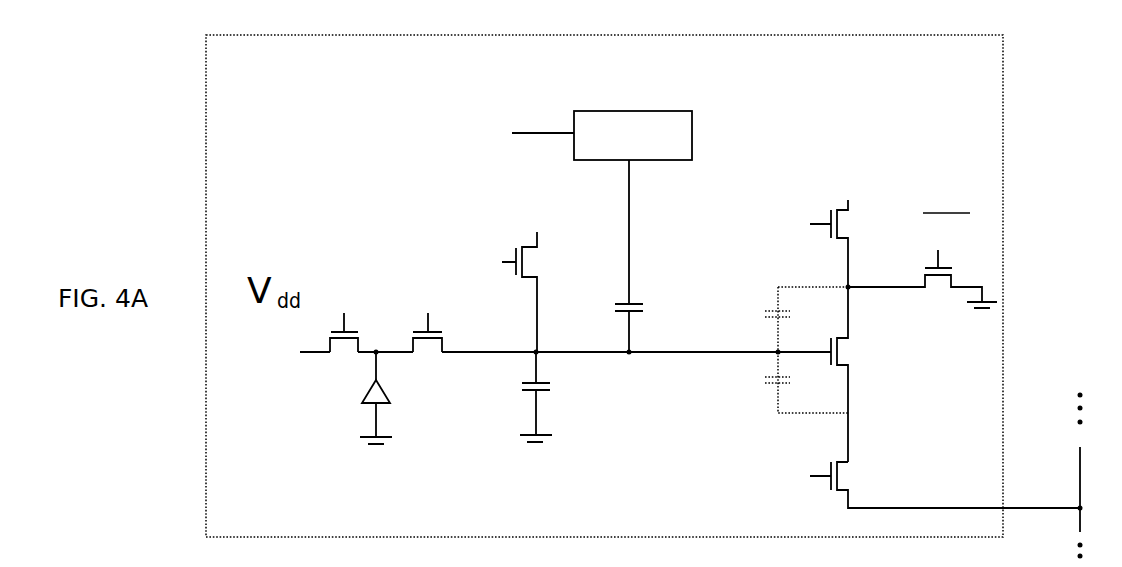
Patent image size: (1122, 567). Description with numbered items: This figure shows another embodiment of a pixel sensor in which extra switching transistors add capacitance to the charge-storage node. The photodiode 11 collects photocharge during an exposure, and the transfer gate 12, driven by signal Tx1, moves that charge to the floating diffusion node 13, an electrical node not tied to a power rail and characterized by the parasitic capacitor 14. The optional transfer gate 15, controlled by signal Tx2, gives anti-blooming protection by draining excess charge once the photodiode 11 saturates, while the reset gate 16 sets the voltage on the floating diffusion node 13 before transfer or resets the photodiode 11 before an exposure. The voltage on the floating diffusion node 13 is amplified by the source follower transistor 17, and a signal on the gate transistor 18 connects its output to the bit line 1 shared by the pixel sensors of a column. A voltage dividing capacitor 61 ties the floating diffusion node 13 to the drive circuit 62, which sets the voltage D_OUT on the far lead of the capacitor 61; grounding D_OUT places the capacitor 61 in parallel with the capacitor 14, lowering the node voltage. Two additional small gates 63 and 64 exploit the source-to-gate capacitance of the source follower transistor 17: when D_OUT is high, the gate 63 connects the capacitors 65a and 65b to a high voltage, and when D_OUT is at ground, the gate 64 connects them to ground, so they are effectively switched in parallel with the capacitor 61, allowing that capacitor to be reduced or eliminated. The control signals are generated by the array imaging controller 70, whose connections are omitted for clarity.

The column signal line 1 is at (1082, 518).
The photodiode 11 is at (391, 399).
The transfer gate 12 is at (443, 345).
The floating diffusion node 13 is at (539, 351).
The parasitic capacitor 14 is at (551, 391).
The transfer gate 15 is at (359, 343).
The reset gate 16 is at (526, 263).
The source follower transistor 17 is at (850, 348).
The gate transistor 18 is at (850, 471).
The voltage dividing capacitor 61 is at (644, 313).
The drive circuit 62 is at (694, 137).
The gate 63 is at (850, 229).
The gate 64 is at (953, 285).
The capacitor 65a is at (765, 316).
The capacitor 65b is at (765, 380).
The array imaging controller 70 is at (1005, 145).